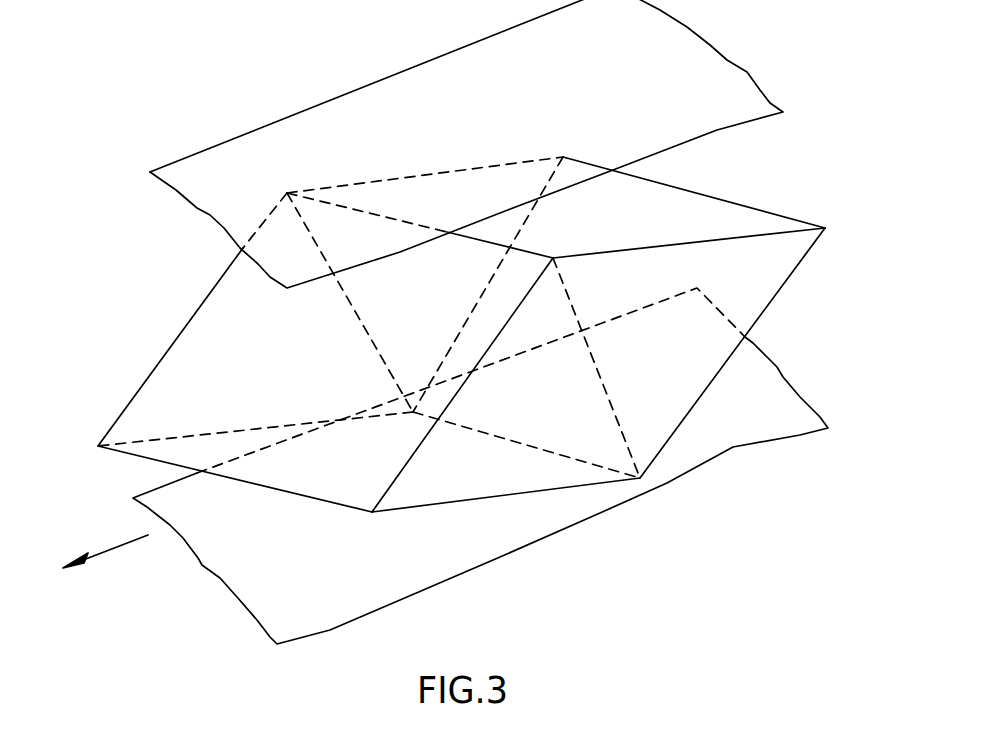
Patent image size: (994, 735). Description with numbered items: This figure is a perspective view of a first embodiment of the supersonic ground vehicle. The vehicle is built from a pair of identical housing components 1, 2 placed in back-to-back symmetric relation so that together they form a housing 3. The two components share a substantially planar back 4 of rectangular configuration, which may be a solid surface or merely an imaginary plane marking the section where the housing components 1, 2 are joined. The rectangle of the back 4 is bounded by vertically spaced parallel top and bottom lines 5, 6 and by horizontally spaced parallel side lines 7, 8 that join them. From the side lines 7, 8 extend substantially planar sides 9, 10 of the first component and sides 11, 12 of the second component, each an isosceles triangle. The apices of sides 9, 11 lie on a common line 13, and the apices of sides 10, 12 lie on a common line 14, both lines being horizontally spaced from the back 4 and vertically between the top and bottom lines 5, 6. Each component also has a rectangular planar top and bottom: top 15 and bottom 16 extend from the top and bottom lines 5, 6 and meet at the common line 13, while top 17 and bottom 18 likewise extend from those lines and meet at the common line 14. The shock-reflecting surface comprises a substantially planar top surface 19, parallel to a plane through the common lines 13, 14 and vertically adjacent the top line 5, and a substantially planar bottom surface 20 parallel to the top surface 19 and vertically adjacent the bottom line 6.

The housing component 1 is at (513, 468).
The housing component 2 is at (687, 353).
The housing 3 is at (853, 240).
The back 4 is at (572, 407).
The top line 5 is at (523, 250).
The bottom line 6 is at (500, 440).
The side line 7 is at (358, 315).
The side line 8 is at (593, 355).
The side 9 is at (203, 337).
The side 10 is at (458, 188).
The side 11 is at (432, 492).
The side 12 is at (780, 262).
The common line 13 is at (287, 493).
The common line 14 is at (730, 197).
The top 15 is at (182, 375).
The bottom 16 is at (368, 487).
The top 17 is at (640, 203).
The bottom 18 is at (750, 302).
The top surface 19 is at (352, 97).
The bottom surface 20 is at (383, 588).